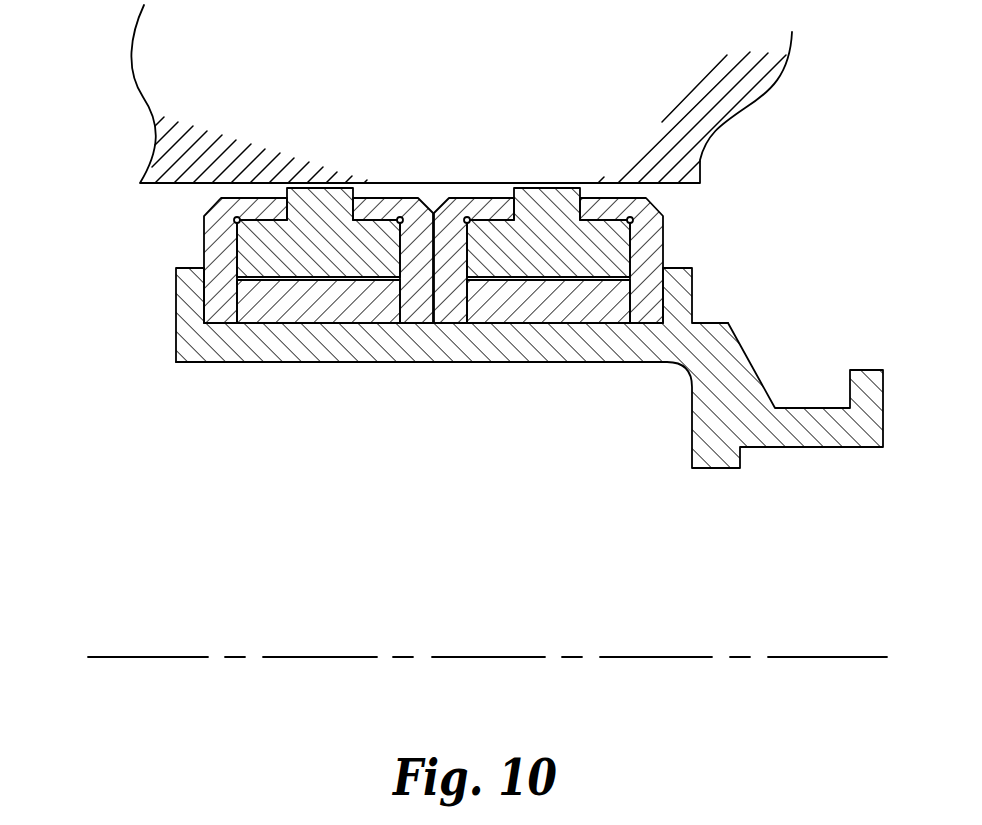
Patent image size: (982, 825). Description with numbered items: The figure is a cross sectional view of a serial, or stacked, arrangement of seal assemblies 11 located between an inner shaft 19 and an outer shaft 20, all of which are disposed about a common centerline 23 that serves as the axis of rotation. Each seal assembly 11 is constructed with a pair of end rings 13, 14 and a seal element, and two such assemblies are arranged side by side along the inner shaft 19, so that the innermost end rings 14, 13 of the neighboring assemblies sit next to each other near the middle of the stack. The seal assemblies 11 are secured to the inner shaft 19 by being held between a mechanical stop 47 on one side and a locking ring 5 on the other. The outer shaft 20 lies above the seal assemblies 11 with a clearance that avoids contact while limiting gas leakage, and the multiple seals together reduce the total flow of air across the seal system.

The locking ring 5 is at (472, 367).
The seal assembly 11 is at (165, 228).
The end ring 13 is at (468, 216).
The end ring 14 is at (398, 216).
The inner shaft 19 is at (716, 442).
The outer shaft 20 is at (256, 87).
The centerline 23 is at (783, 657).
The mechanical stop 47 is at (183, 306).